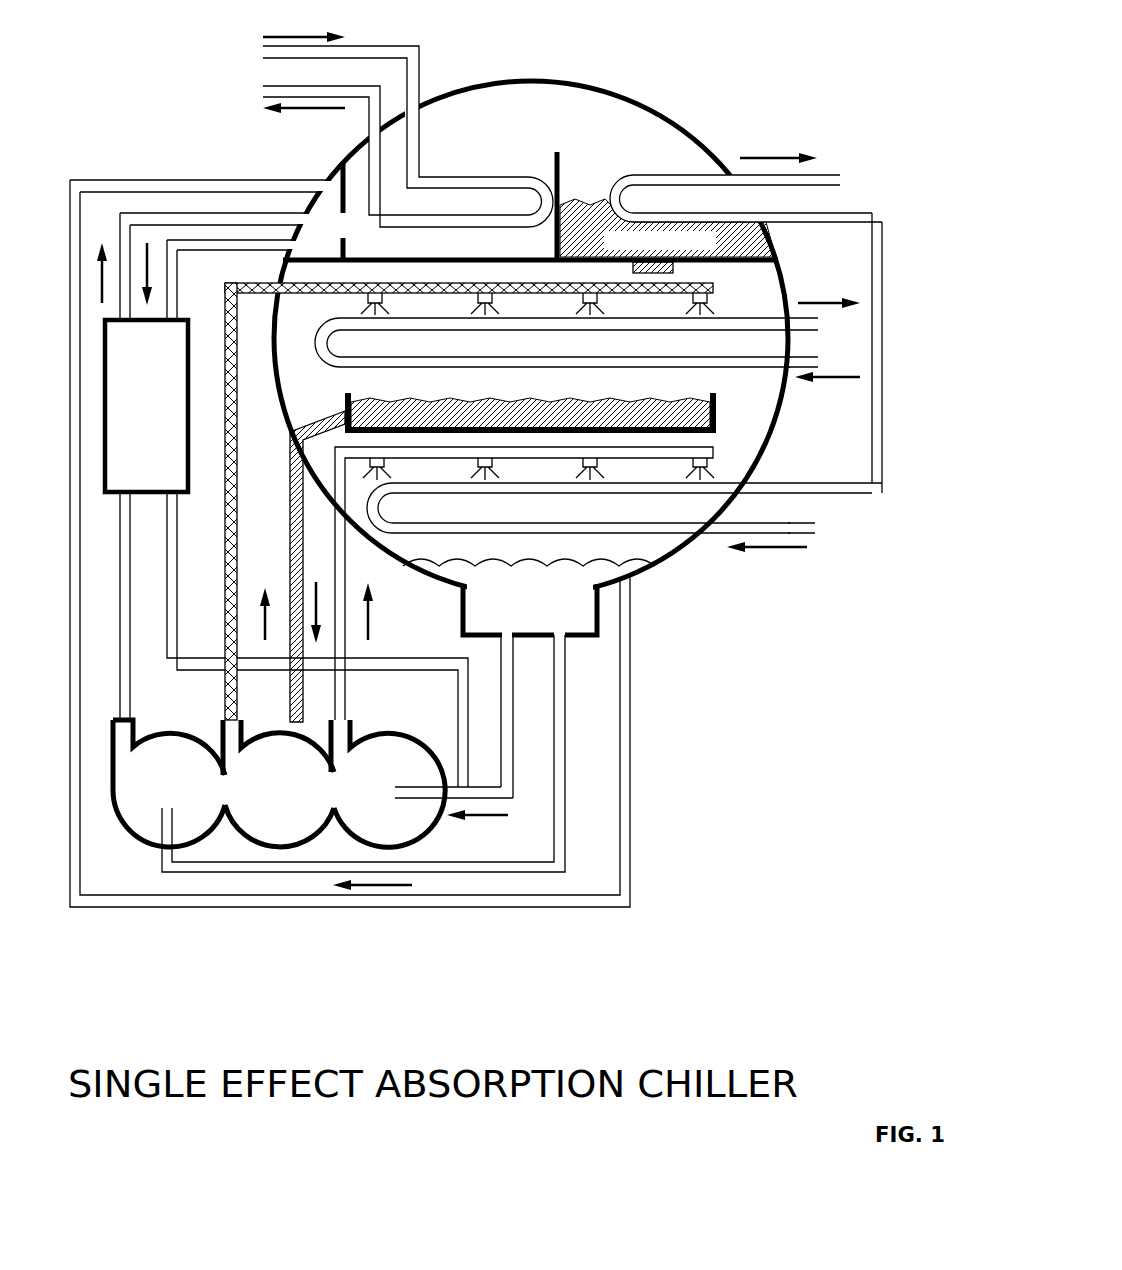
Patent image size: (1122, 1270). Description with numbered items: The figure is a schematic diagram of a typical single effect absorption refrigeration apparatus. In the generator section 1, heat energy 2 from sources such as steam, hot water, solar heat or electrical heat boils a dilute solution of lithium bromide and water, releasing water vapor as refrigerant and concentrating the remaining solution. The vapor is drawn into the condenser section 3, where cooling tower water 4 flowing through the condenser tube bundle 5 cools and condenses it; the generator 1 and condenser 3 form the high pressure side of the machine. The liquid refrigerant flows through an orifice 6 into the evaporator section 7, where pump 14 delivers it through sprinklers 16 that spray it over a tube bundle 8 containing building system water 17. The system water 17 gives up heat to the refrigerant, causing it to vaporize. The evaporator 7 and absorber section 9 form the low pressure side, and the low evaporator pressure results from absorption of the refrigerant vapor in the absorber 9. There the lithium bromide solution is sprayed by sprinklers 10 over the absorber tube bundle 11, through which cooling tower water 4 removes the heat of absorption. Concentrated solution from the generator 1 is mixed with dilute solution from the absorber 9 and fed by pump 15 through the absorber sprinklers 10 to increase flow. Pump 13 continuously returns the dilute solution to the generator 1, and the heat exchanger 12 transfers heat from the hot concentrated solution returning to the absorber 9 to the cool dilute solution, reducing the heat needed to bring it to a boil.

The generator section 1 is at (550, 47).
The heat energy 2 is at (394, 116).
The condenser section 3 is at (713, 72).
The cooling tower water 4 is at (797, 573).
The condenser tube bundle 5 is at (868, 218).
The orifice 6 is at (656, 252).
The evaporator section 7 is at (552, 342).
The tube bundle 8 is at (813, 360).
The absorber section 9 is at (578, 508).
The sprinklers 10 is at (524, 583).
The absorber tube bundle 11 is at (883, 487).
The heat exchanger 12 is at (135, 404).
The pump 13 is at (169, 783).
The pump 14 is at (278, 783).
The pump 15 is at (388, 783).
The sprinklers 16 is at (713, 310).
The building system water 17 is at (860, 530).